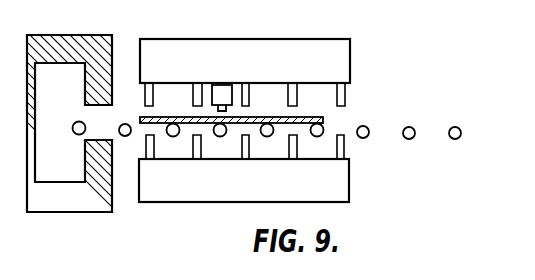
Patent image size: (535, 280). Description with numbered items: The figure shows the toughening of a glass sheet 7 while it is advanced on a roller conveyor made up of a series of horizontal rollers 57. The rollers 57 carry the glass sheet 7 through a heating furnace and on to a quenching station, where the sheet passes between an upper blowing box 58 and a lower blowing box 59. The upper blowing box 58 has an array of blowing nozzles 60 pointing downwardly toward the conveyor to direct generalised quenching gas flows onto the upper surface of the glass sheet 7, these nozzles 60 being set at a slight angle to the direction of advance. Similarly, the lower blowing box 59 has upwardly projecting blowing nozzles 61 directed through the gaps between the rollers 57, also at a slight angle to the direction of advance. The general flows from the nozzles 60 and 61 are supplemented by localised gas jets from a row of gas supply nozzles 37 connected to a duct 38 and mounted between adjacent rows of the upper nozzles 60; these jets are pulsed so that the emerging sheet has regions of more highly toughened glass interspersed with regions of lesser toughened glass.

The glass sheet 7 is at (303, 125).
The gas supply nozzles 37 is at (228, 111).
The duct 38 is at (223, 97).
The horizontal rollers 57 is at (74, 123).
The upper blowing box 58 is at (351, 59).
The lower blowing box 59 is at (343, 186).
The blowing nozzles 60 is at (346, 101).
The blowing nozzles 61 is at (344, 142).